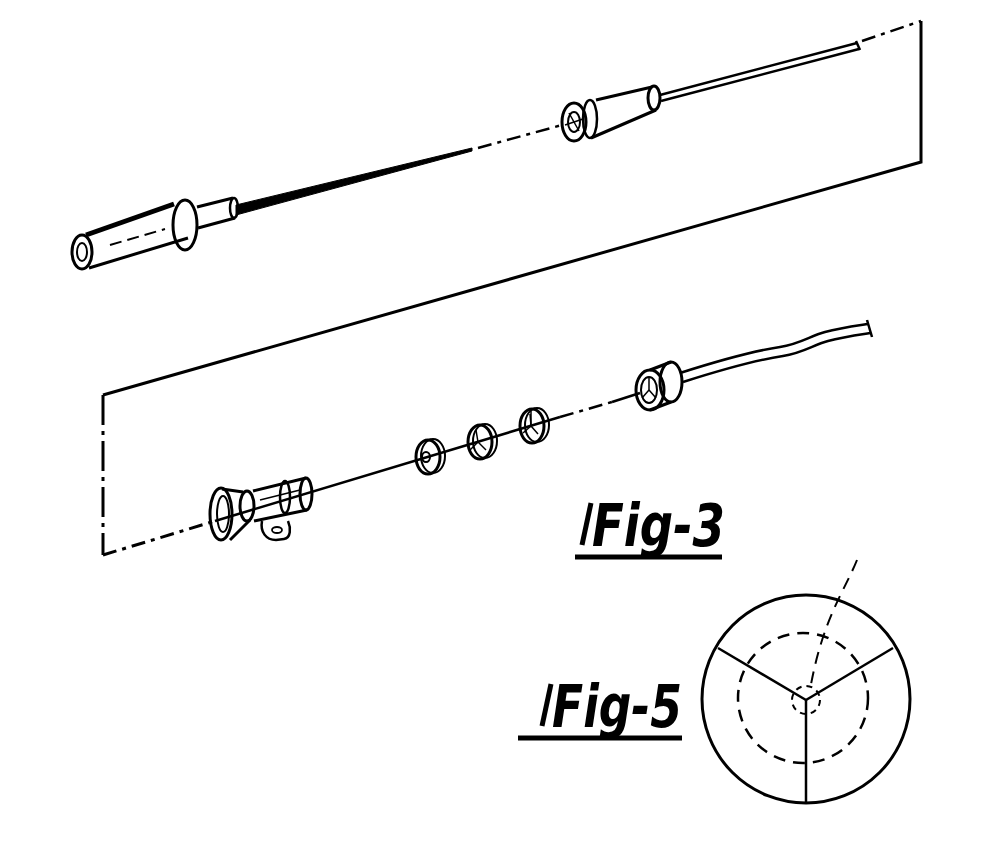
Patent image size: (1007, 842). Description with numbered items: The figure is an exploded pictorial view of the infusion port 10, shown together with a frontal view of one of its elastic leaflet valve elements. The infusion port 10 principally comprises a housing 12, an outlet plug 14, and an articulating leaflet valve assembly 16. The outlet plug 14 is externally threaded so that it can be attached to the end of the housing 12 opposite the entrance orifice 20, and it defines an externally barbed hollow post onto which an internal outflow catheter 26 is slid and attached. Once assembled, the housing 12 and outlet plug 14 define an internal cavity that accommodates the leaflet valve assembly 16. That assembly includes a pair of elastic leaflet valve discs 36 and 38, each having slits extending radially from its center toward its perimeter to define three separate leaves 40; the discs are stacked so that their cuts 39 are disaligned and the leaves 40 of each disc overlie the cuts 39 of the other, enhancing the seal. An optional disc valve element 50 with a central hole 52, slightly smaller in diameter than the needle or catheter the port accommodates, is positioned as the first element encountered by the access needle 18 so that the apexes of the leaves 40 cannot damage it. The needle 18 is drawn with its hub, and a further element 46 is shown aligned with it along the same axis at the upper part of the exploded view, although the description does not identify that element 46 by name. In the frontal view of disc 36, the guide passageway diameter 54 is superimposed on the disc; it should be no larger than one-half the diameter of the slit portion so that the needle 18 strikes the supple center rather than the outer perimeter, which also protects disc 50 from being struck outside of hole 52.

In FIG. 5, the infusion port 10 is at (393, 841).
In FIG. 3, the housing 12 is at (282, 477).
In FIG. 5, the housing 12 is at (543, 834).
In FIG. 3, the outlet plug 14 is at (663, 360).
In FIG. 3, the articulating valve assembly 16 is at (509, 472).
In FIG. 3, the needle 18 is at (273, 207).
In FIG. 3, the entrance orifice 20 is at (218, 538).
In FIG. 3, the internal outflow catheter 26 is at (782, 357).
In FIG. 3, the elastic leaflet valve disc 36 is at (487, 462).
In FIG. 5, the elastic leaflet valve disc 36 is at (880, 627).
In FIG. 3, the elastic leaflet valve disc 38 is at (540, 437).
In FIG. 3, the cuts 39 is at (473, 456).
In FIG. 3, the leaves 40 is at (522, 440).
In FIG. 5, the leaves 40 is at (842, 715).
In FIG. 3, the stylet 46 is at (722, 87).
In FIG. 3, the disc valve element 50 is at (417, 448).
In FIG. 3, the hole 52 is at (428, 472).
In FIG. 5, the passageway diameter 54 is at (845, 608).